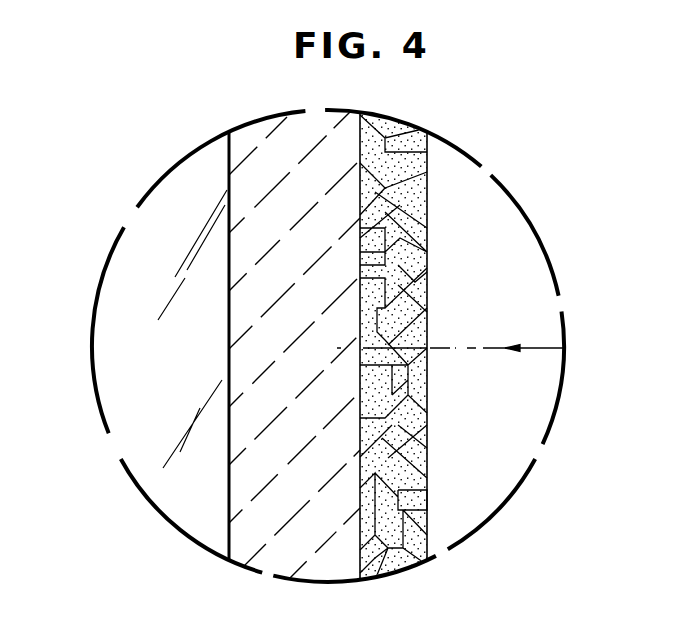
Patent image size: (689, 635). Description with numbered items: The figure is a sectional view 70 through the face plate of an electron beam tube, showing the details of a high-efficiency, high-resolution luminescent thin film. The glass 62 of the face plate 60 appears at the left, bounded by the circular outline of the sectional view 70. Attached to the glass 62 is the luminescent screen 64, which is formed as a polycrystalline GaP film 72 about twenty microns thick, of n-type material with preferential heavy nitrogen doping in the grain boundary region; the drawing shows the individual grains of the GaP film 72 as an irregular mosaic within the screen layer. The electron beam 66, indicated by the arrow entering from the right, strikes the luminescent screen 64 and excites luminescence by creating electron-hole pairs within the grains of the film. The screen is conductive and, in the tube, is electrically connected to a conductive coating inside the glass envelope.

The face plate 60 is at (127, 328).
The glass 62 is at (274, 126).
The luminescent screen 64 is at (436, 261).
The electron beam 66 is at (454, 350).
The sectional view 70 is at (172, 168).
The polycrystalline GaP film 72 is at (415, 156).